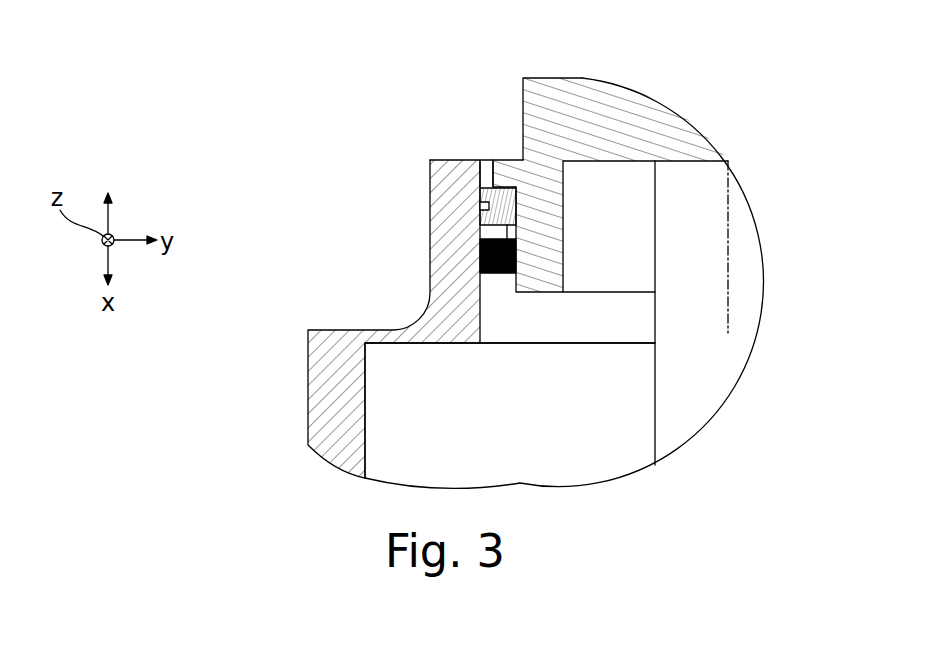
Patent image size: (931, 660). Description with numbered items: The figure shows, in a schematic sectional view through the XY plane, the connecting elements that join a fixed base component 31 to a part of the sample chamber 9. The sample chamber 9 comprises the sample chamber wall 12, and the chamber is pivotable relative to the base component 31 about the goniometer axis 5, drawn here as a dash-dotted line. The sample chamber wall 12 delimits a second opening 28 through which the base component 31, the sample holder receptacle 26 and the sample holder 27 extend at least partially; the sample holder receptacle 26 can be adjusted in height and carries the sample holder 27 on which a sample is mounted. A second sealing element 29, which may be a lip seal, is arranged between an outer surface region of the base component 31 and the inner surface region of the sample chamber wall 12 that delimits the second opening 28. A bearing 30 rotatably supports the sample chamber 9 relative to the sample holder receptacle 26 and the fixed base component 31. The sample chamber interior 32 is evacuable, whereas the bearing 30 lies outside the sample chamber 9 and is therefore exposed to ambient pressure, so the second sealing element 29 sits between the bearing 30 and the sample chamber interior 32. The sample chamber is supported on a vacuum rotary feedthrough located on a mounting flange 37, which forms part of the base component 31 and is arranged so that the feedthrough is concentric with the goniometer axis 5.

The goniometer axis 5 is at (730, 220).
The sample chamber 9 is at (237, 398).
The sample chamber wall 12 is at (447, 310).
The sample holder receptacle 26 is at (623, 185).
The sample holder 27 is at (667, 392).
The second opening 28 is at (493, 130).
The second sealing element 29 is at (481, 256).
The bearing 30 is at (487, 197).
The base component 31 is at (628, 110).
The sample chamber interior 32 is at (487, 427).
The mounting flange 37 is at (497, 168).